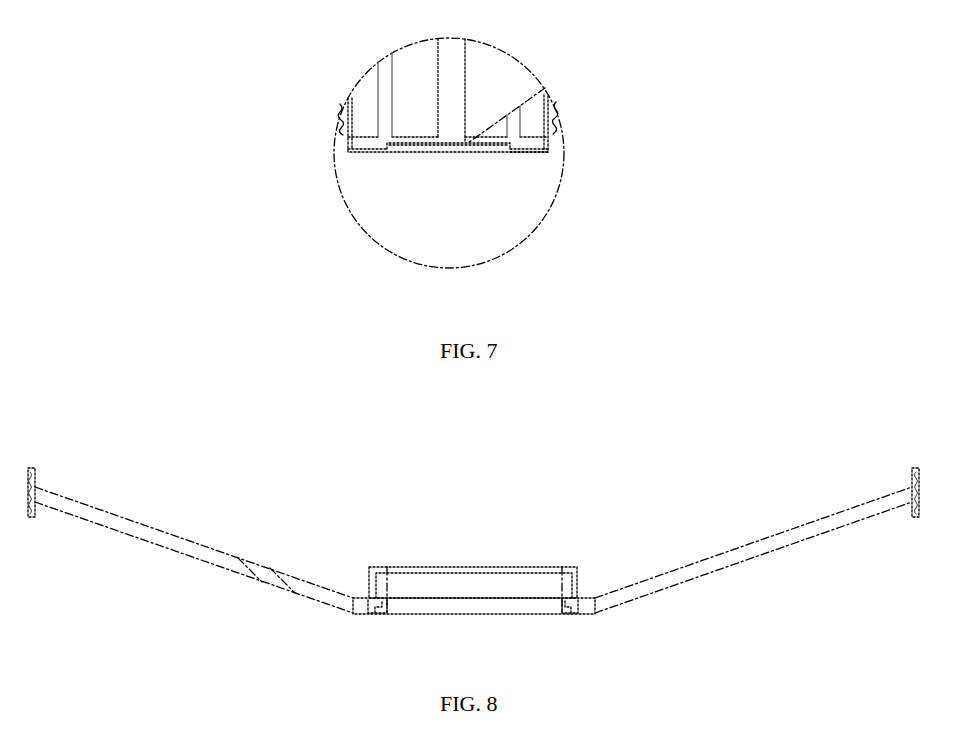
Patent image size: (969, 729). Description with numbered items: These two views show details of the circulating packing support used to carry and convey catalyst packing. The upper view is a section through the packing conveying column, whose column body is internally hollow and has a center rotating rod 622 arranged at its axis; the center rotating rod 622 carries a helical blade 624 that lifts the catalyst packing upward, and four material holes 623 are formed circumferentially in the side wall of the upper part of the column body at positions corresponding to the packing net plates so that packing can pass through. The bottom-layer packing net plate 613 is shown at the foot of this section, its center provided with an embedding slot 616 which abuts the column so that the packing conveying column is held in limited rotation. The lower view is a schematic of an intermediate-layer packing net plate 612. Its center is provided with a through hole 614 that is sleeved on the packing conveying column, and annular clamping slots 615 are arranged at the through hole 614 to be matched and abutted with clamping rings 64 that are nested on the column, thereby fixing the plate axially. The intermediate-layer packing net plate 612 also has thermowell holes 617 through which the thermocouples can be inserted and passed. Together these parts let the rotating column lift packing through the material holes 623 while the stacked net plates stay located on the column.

In FIG. 8, the clamping ring 64 is at (530, 567).
In FIG. 8, the intermediate-layer packing net plate 612 is at (160, 530).
In FIG. 7, the bottom-layer packing net plate 613 is at (420, 148).
In FIG. 8, the through hole 614 is at (472, 607).
In FIG. 8, the annular clamping slot 615 is at (375, 607).
In FIG. 7, the embedding slot 616 is at (520, 152).
In FIG. 8, the thermowell hole 617 is at (262, 581).
In FIG. 7, the center rotating rod 622 is at (453, 62).
In FIG. 7, the material hole 623 is at (403, 103).
In FIG. 7, the helical blade 624 is at (505, 85).